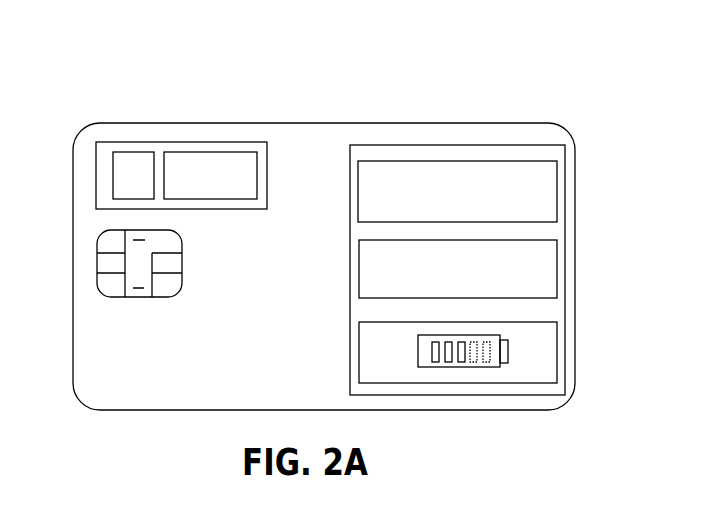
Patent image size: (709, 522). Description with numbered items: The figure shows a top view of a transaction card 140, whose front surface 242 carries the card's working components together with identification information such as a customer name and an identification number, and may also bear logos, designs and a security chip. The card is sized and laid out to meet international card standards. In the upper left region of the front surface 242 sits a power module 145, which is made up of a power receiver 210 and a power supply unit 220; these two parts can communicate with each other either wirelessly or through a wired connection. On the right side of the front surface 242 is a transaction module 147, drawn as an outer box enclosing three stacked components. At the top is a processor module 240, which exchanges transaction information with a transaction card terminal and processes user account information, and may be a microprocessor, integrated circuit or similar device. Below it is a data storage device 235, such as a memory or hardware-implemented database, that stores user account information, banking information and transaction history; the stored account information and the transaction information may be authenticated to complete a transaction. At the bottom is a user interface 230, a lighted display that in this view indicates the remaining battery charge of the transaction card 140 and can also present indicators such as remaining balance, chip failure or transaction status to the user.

The transaction card 140 is at (325, 122).
The power module 145 is at (200, 129).
The transaction module 147 is at (510, 222).
The power receiver 210 is at (133, 152).
The power supply unit 220 is at (210, 152).
The user interface 230 is at (558, 351).
The data storage device 235 is at (558, 271).
The processor module 240 is at (557, 193).
The front surface 242 is at (283, 268).